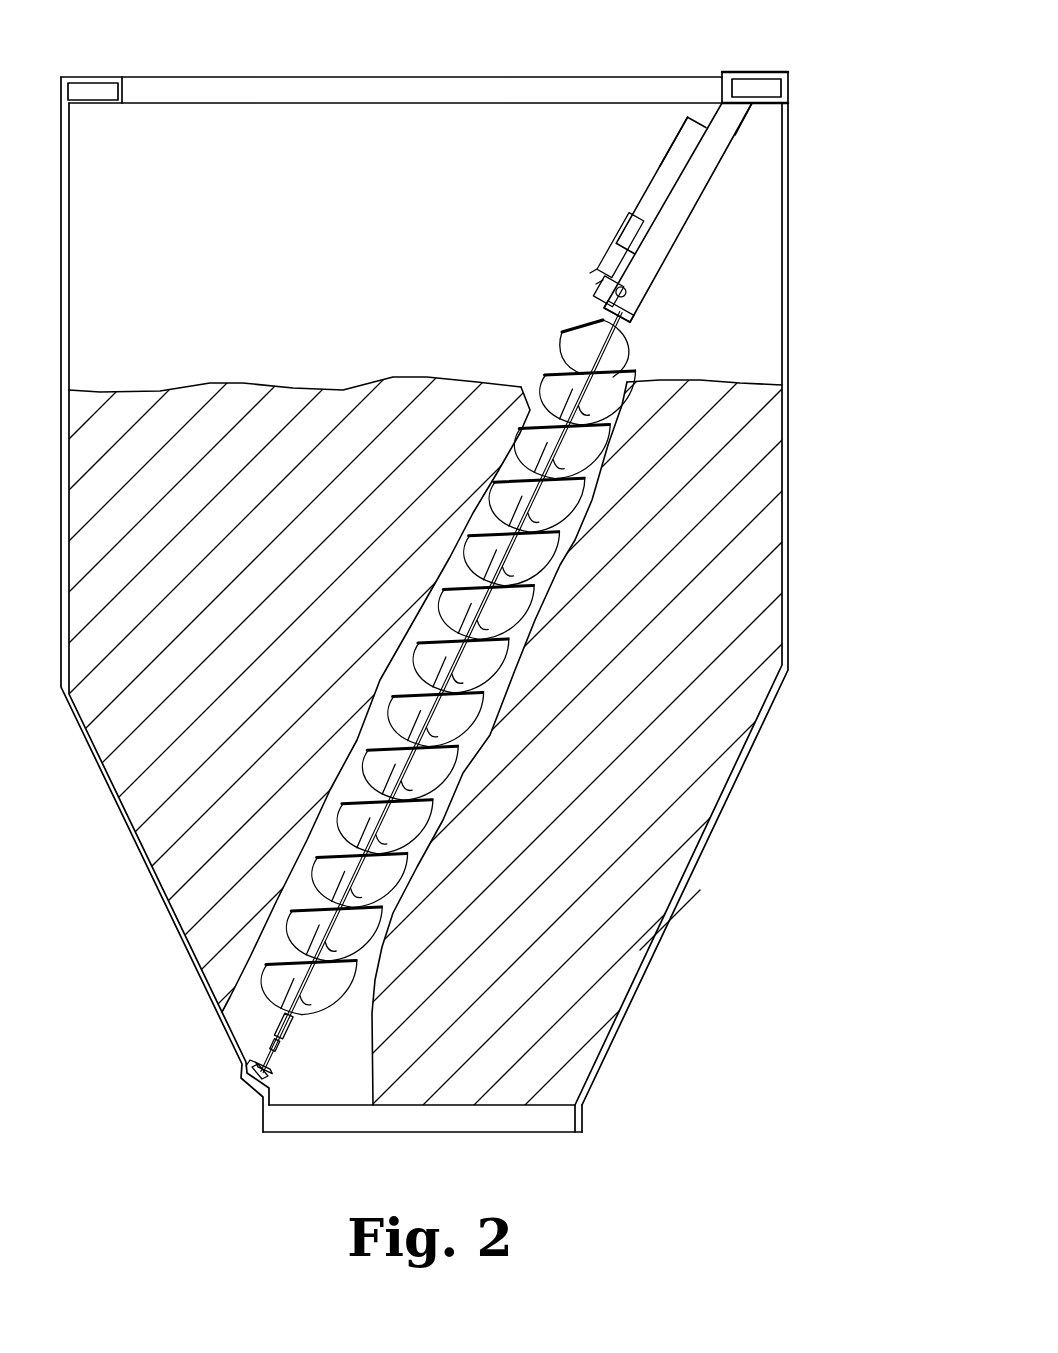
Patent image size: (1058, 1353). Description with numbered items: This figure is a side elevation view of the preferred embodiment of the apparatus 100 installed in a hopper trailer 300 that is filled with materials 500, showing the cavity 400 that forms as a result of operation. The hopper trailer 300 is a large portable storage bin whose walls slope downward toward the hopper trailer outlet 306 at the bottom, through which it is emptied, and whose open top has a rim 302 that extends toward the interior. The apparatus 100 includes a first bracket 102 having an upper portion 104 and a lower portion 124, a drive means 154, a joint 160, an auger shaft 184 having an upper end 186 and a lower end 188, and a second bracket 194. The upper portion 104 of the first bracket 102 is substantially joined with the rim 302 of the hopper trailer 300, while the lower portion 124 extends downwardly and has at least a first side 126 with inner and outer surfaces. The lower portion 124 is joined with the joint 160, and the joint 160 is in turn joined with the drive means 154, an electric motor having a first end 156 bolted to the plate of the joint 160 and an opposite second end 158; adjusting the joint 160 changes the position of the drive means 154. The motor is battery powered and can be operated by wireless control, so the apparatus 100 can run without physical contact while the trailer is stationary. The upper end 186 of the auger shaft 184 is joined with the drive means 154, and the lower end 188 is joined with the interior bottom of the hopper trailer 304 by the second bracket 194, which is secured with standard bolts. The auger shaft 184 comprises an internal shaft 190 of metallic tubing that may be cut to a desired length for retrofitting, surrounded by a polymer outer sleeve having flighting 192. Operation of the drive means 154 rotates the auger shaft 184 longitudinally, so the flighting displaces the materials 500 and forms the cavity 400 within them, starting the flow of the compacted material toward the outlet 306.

The apparatus 100 is at (339, 728).
The first bracket 102 is at (717, 84).
The upper portion 104 is at (749, 70).
The lower portion 124 is at (676, 142).
The first side 126 is at (701, 175).
The drive means 154 is at (624, 248).
The first end 156 is at (645, 303).
The second end 158 is at (740, 130).
The joint 160 is at (601, 284).
The auger shaft 184 is at (339, 692).
The upper end 186 is at (565, 330).
The lower end 188 is at (292, 1034).
The internal shaft 190 is at (262, 1058).
The outer sleeve having flighting 192 is at (267, 982).
The second bracket 194 is at (255, 1085).
The hopper trailer 300 is at (790, 553).
The rim 302 is at (767, 87).
The interior of the hopper trailer 304 is at (508, 901).
The hopper trailer outlet 306 is at (487, 1122).
The cavity 400 is at (525, 390).
The materials 500 is at (210, 420).